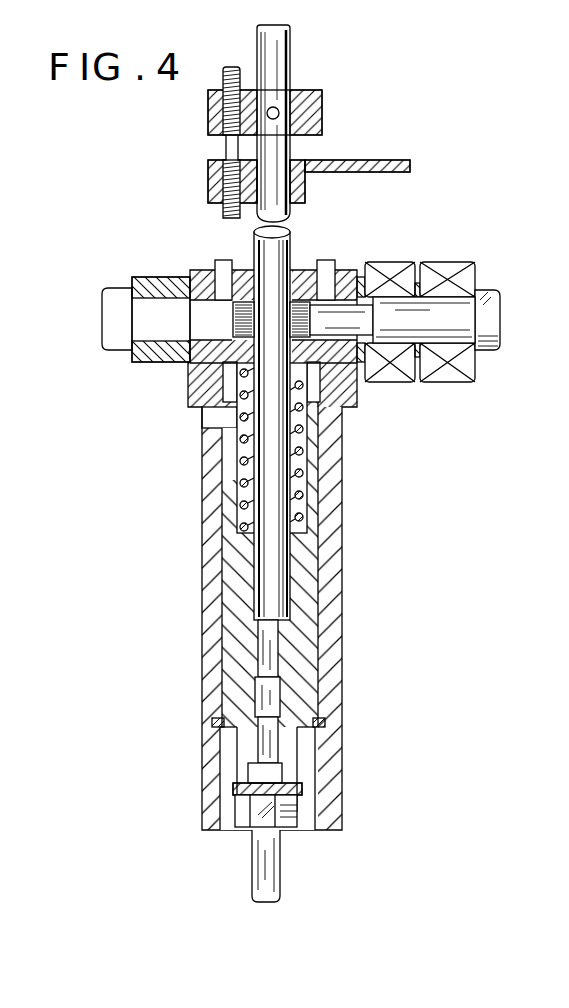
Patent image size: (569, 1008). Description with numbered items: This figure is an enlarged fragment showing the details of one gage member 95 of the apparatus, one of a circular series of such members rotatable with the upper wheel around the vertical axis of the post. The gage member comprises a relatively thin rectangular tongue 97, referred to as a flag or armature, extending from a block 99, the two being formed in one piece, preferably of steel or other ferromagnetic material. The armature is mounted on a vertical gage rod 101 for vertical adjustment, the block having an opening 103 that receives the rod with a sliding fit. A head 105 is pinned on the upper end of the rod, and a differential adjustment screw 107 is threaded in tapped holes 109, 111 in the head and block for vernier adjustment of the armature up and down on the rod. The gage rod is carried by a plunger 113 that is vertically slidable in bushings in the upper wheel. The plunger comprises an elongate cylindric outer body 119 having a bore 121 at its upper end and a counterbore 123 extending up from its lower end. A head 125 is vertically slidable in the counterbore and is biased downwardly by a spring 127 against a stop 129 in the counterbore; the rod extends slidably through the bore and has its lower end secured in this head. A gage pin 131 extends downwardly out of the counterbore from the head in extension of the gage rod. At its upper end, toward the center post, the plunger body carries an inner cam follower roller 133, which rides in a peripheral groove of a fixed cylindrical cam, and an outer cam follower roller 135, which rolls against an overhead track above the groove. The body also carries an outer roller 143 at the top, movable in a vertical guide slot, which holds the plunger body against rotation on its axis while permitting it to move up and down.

The gage member 95 is at (304, 118).
The tongue 97 is at (410, 166).
The block 99 is at (208, 178).
The gage rod 101 is at (292, 28).
The opening 103 is at (305, 197).
The head 105 is at (322, 105).
The differential adjustment screw 107 is at (233, 50).
The tapped hole 109 is at (215, 112).
The tapped hole 111 is at (210, 192).
The plunger 113 is at (343, 616).
The outer body 119 is at (332, 787).
The bore 121 is at (292, 250).
The counterbore 123 is at (222, 768).
The head 125 is at (237, 612).
The spring 127 is at (242, 457).
The stop 129 is at (325, 722).
The gage pin 131 is at (282, 870).
The inner cam follower roller 133 is at (452, 262).
The outer cam follower roller 135 is at (388, 262).
The outer roller 143 is at (160, 363).